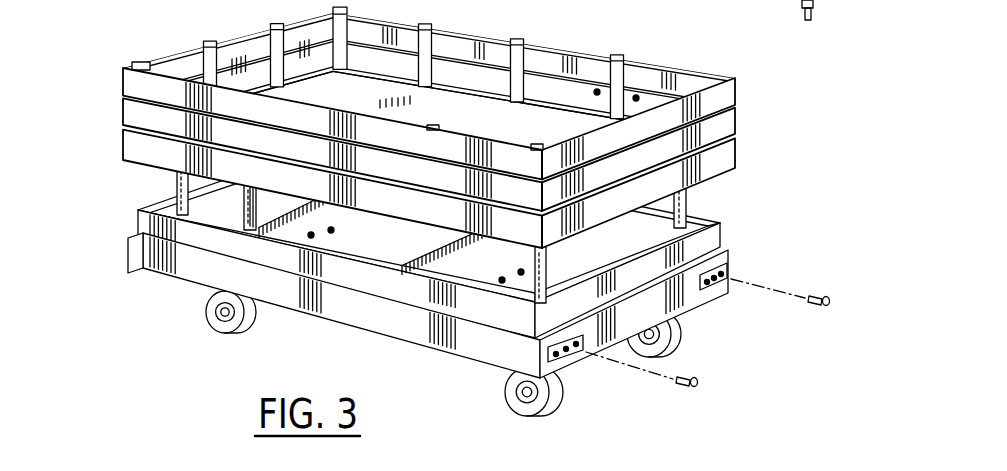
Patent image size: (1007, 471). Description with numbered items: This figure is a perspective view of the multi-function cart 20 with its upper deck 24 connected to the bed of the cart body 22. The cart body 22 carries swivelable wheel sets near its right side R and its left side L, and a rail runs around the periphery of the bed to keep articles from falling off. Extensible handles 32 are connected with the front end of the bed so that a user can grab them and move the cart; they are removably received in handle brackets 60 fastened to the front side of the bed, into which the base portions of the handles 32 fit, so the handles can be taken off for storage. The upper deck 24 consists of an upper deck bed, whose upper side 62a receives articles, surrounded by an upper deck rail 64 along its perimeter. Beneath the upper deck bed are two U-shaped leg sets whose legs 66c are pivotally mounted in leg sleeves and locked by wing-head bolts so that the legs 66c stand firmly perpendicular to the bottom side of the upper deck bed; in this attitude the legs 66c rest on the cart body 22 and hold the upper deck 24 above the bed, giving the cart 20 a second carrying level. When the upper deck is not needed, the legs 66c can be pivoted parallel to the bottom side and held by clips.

The multi-function cart 20 is at (104, 201).
The cart body 22 is at (752, 262).
The upper deck 24 is at (751, 116).
The extensible handles 32 is at (188, 241).
The handle brackets 60 is at (728, 279).
The upper side of upper deck bed 62a is at (541, 127).
The upper deck rail 64 is at (126, 109).
The legs 66c is at (174, 182).
The left side L is at (702, 294).
The right side R is at (335, 319).